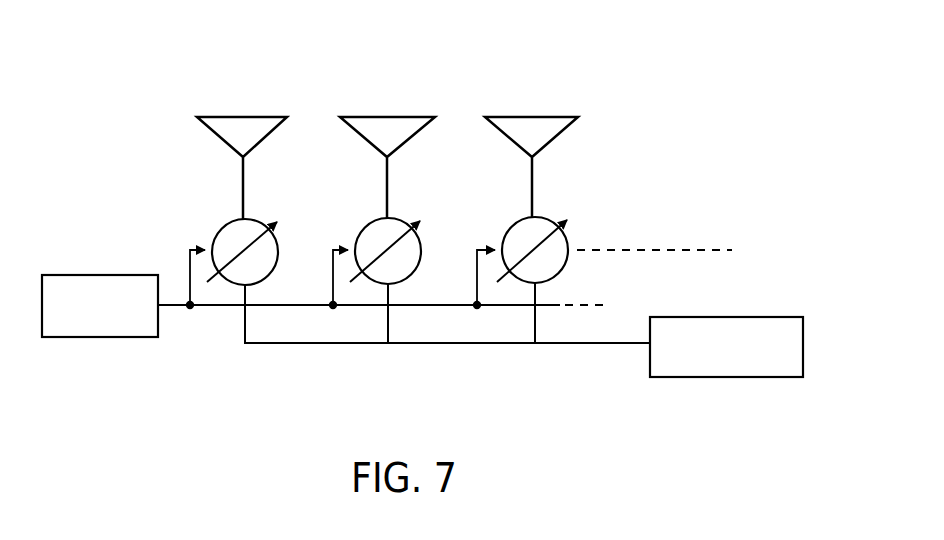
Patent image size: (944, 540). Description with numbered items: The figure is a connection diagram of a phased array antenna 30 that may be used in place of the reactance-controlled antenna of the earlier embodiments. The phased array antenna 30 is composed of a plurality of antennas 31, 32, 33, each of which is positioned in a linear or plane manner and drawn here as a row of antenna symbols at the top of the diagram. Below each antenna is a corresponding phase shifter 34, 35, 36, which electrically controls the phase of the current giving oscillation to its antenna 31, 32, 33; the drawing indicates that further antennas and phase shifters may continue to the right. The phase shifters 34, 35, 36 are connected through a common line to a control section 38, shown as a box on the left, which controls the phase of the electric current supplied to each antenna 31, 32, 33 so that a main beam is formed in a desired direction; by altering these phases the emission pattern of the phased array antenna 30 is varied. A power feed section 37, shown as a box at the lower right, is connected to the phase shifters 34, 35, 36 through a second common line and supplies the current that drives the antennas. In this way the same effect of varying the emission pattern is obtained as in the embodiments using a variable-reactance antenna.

The phased array antenna 30 is at (663, 35).
The antenna 31 is at (259, 117).
The antenna 32 is at (410, 117).
The antenna 33 is at (556, 117).
The phase shifter 34 is at (221, 222).
The phase shifter 35 is at (364, 221).
The phase shifter 36 is at (510, 220).
The power feed section 37 is at (697, 317).
The control section 38 is at (119, 275).